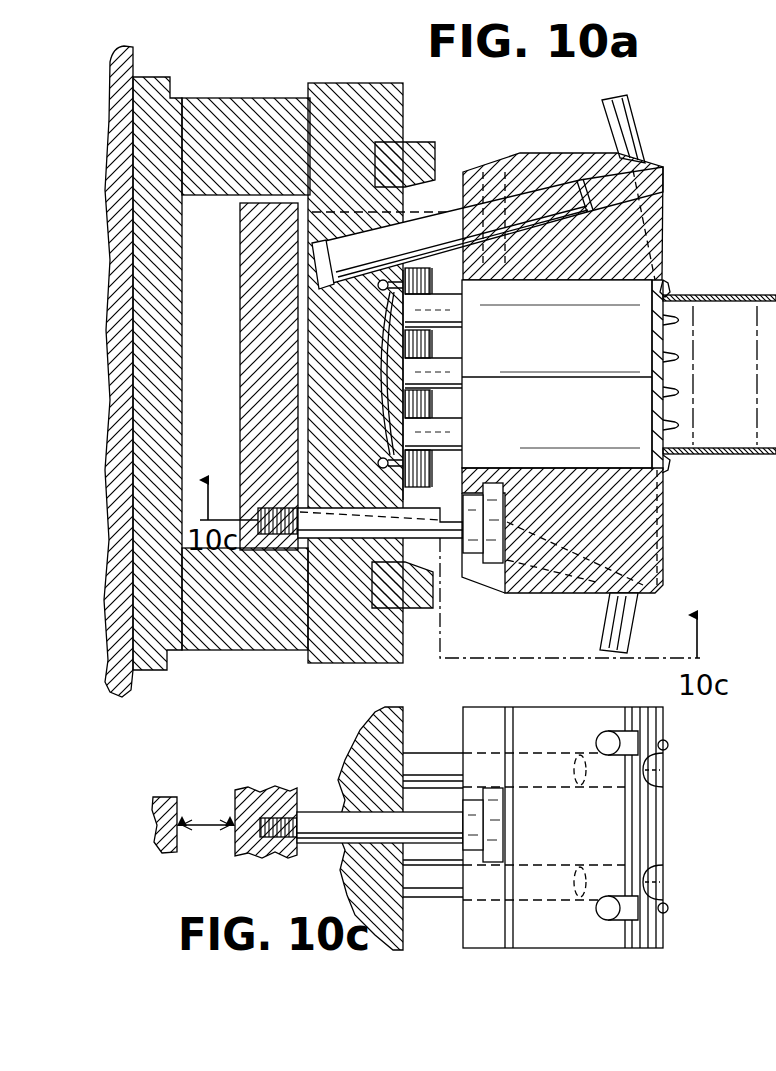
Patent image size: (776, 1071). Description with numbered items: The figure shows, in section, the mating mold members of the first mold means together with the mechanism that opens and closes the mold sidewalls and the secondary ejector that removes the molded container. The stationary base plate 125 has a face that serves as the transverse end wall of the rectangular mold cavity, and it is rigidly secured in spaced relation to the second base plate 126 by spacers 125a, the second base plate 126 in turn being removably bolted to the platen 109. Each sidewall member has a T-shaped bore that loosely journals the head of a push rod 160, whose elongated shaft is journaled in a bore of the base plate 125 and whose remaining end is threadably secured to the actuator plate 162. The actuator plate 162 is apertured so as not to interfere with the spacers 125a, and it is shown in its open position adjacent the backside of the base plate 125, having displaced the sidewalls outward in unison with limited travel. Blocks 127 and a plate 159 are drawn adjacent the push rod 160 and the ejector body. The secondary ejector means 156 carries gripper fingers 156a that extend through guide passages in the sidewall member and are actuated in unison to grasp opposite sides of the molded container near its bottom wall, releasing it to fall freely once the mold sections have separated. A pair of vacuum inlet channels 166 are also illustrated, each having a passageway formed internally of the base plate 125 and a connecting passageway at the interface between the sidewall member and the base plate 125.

In FIG. 10a, the platen 109 is at (113, 675).
In FIG. 10a, the base plate 125 is at (333, 102).
In FIG. 10c, the base plate 125 is at (363, 733).
In FIG. 10a, the spacers 125a is at (217, 118).
In FIG. 10c, the second base plate 126 is at (165, 797).
In FIG. 10a, the guide block 127 is at (418, 142).
In FIG. 10a, the secondary ejector means 156 is at (605, 633).
In FIG. 10c, the secondary ejector means 156 is at (630, 735).
In FIG. 10a, the gripper fingers 156a is at (670, 290).
In FIG. 10a, the plate 159 is at (490, 468).
In FIG. 10c, the plate 159 is at (470, 765).
In FIG. 10a, the push rod 160 is at (340, 522).
In FIG. 10c, the push rod 160 is at (437, 825).
In FIG. 10a, the actuator plate 162 is at (257, 387).
In FIG. 10c, the actuator plate 162 is at (265, 788).
In FIG. 10a, the inlet channels 166 is at (384, 455).